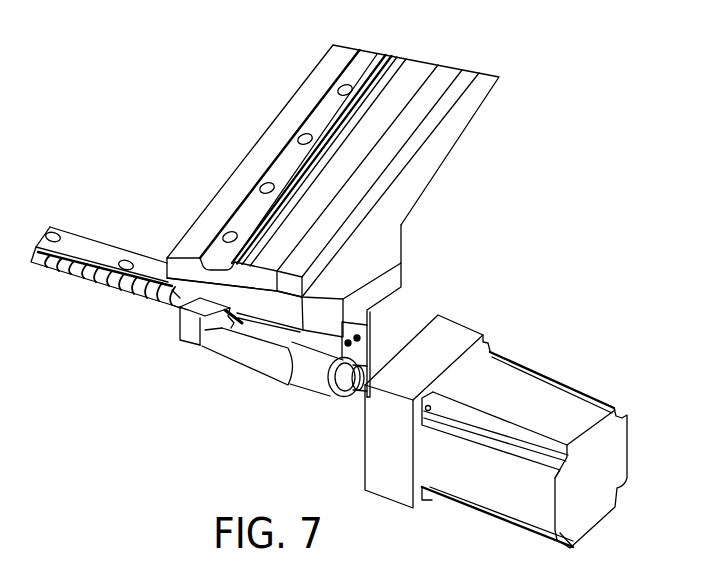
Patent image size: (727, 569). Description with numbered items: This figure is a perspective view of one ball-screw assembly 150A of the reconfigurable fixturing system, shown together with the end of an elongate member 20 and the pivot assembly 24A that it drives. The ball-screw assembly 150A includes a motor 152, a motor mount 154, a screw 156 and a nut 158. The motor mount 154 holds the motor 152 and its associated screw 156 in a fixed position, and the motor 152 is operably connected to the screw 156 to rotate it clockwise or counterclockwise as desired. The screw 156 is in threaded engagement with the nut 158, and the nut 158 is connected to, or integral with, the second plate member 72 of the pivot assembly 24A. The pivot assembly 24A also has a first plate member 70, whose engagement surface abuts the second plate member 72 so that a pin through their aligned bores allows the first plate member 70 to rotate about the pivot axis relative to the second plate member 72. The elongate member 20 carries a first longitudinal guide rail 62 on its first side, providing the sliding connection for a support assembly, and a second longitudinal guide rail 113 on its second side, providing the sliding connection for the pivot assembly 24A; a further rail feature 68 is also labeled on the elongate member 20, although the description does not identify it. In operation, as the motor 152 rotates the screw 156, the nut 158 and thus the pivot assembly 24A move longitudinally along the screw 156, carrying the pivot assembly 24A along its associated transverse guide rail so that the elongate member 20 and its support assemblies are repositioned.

The elongate member 20 is at (420, 65).
The first longitudinal guide rail 62 is at (367, 60).
The raised rail bar 68 is at (413, 135).
The first plate member 70 is at (393, 258).
The second plate member 72 is at (248, 358).
The second longitudinal guide rail 113 is at (215, 320).
The ball-screw assembly 150A is at (575, 220).
The motor 152 is at (550, 400).
The motor mount 154 is at (456, 336).
The screw 156 is at (82, 282).
The nut 158 is at (310, 377).
The pivot assembly 24A is at (210, 377).